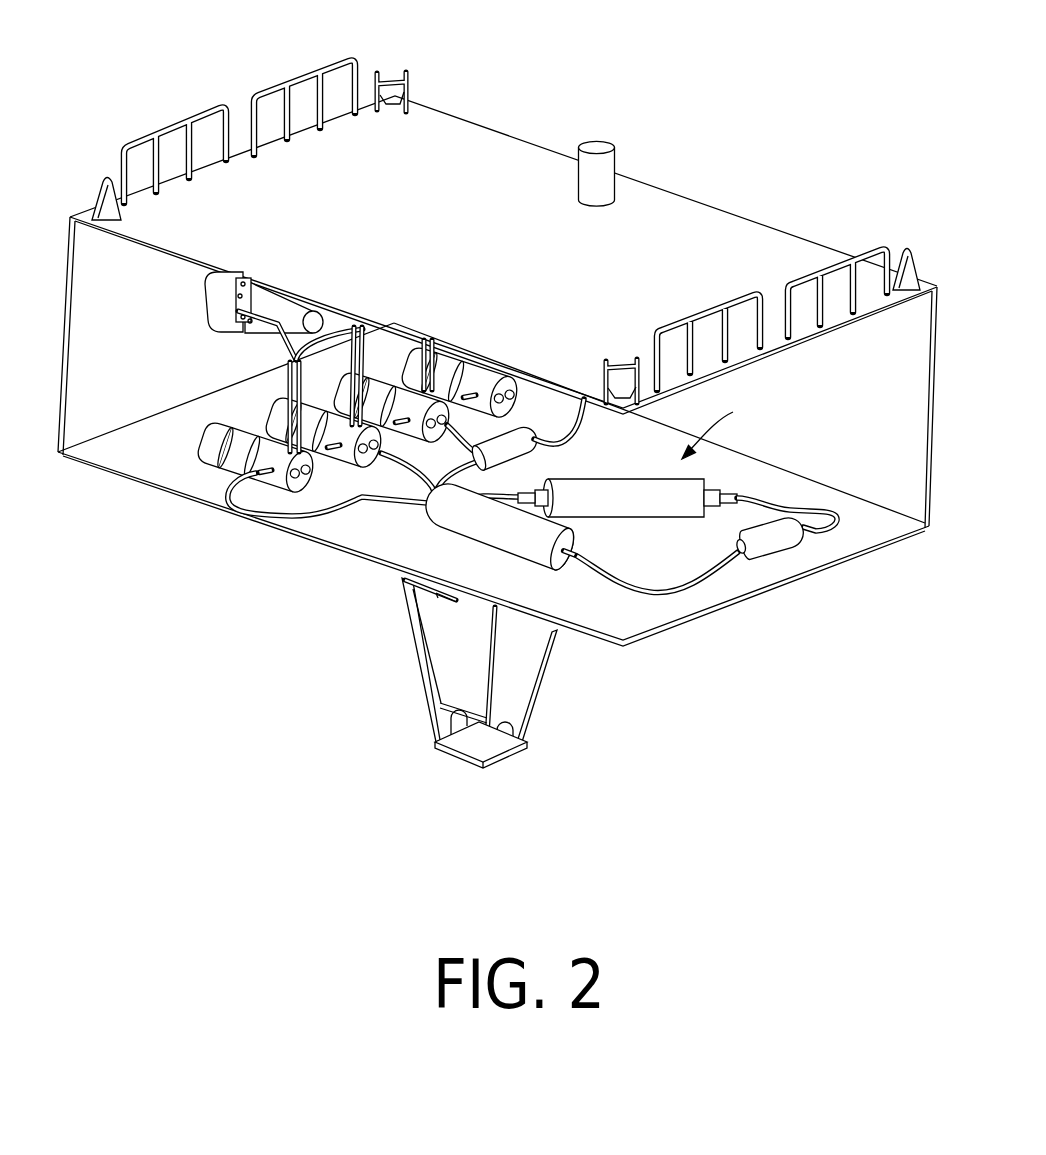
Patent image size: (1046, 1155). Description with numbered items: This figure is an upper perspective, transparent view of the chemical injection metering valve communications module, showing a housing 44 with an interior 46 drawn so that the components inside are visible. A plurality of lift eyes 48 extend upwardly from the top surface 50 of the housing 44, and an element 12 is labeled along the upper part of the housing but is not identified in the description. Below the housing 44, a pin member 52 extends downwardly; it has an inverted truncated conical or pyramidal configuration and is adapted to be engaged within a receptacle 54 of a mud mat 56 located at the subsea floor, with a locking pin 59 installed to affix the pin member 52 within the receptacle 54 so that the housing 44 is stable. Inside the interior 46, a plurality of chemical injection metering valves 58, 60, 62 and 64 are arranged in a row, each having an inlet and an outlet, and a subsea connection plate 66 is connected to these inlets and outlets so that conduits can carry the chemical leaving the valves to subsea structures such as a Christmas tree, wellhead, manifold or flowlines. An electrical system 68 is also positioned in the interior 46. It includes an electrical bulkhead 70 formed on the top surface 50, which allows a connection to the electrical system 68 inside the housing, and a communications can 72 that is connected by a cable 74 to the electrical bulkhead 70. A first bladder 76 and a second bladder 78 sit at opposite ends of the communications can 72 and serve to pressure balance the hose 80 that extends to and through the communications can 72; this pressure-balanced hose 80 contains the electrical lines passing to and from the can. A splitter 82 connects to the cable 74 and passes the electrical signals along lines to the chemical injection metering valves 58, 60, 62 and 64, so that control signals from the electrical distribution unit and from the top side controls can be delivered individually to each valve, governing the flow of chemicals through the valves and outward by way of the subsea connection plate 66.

The housing assembly 12 is at (776, 228).
The housing 44 is at (498, 142).
The interior 46 is at (133, 456).
The lift eyes 48 is at (330, 70).
The top surface 50 is at (452, 130).
The pin member 52 is at (480, 653).
The receptacle 54 is at (420, 663).
The mud mat 56 is at (505, 758).
The chemical injection metering valve 58 is at (208, 457).
The locking pin 59 is at (417, 590).
The chemical injection metering valve 60 is at (277, 415).
The chemical injection metering valve 62 is at (335, 358).
The chemical injection metering valve 64 is at (413, 360).
The subsea connection plate 66 is at (205, 300).
The electrical system 68 is at (724, 428).
The electrical bulkhead 70 is at (616, 165).
The communications can 72 is at (653, 507).
The cable 74 is at (563, 437).
The first bladder 76 is at (521, 428).
The second bladder 78 is at (773, 543).
The hose 80 is at (757, 500).
The splitter 82 is at (470, 526).